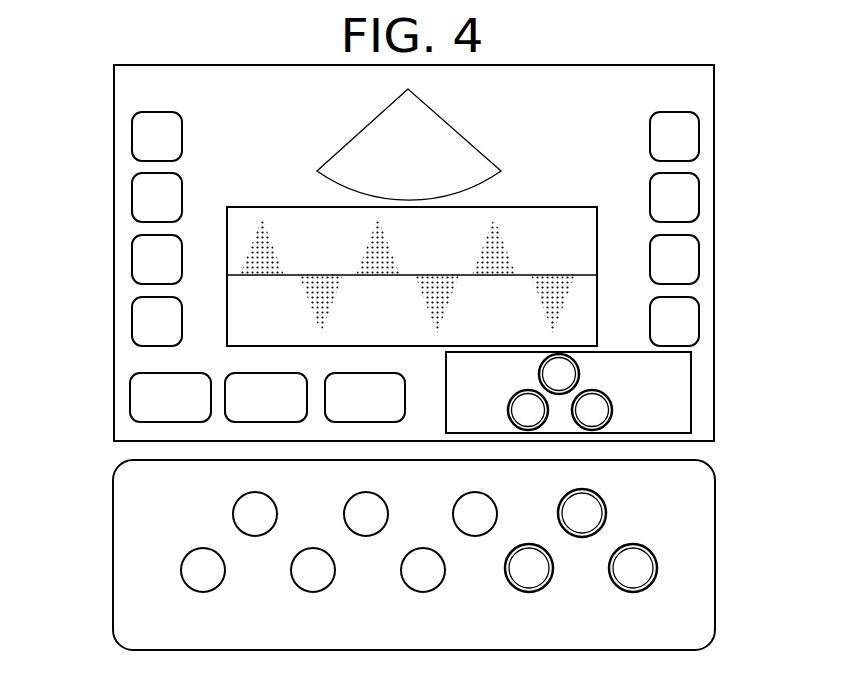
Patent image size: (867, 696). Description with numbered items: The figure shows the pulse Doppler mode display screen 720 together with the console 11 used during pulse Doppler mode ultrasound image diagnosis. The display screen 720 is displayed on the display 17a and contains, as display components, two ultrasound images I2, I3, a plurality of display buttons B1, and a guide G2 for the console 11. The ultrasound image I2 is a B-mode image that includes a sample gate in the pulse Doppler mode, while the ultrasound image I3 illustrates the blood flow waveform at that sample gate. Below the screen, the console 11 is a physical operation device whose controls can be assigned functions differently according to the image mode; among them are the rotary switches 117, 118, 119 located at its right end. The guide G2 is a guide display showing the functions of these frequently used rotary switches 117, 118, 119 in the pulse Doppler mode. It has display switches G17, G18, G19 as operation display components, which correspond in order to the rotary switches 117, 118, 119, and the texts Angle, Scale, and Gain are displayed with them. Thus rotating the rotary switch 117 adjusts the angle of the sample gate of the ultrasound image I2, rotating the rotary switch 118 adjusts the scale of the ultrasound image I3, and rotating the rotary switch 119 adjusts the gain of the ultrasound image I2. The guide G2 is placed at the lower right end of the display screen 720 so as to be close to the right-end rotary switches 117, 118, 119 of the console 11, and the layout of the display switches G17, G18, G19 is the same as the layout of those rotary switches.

The display 17a is at (114, 90).
The pulse Doppler mode display screen 720 is at (702, 96).
The display button B1 is at (132, 139).
The ultrasound image I2 is at (457, 130).
The ultrasound image I3 is at (545, 205).
The guide G2 is at (692, 363).
The display switch G17 is at (518, 393).
The display switch G18 is at (573, 365).
The display switch G19 is at (608, 400).
The console 11 is at (718, 500).
The rotary switch 117 is at (512, 583).
The rotary switch 118 is at (603, 500).
The rotary switch 119 is at (613, 583).